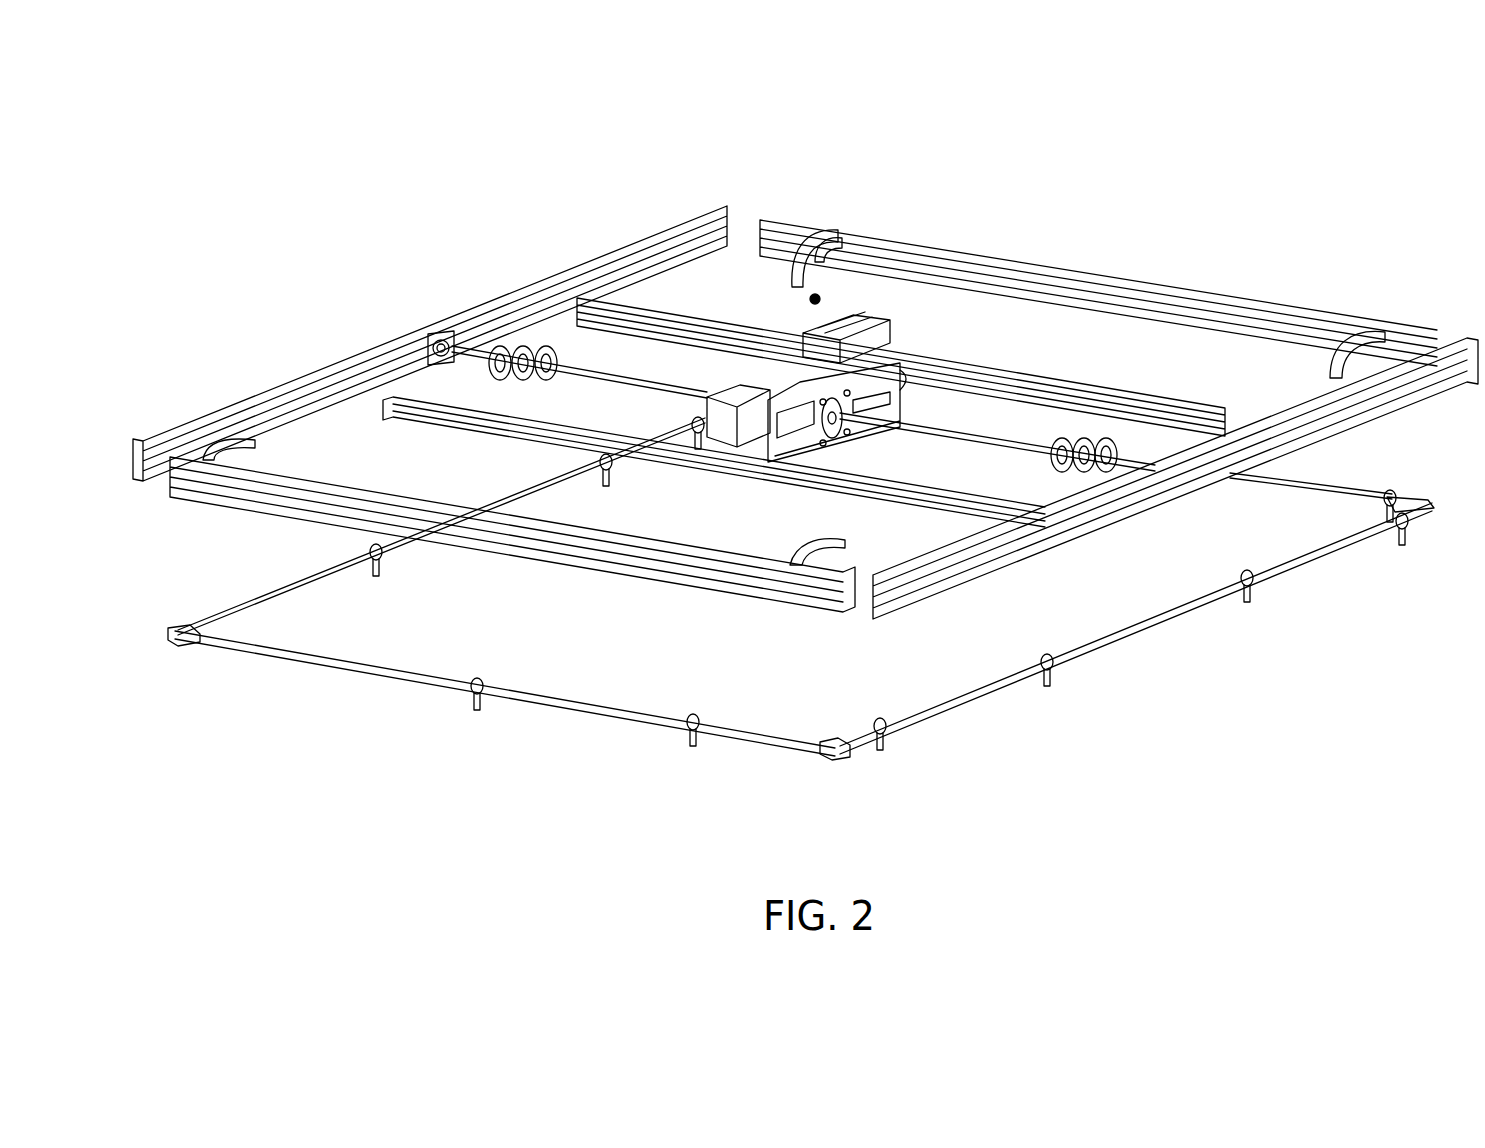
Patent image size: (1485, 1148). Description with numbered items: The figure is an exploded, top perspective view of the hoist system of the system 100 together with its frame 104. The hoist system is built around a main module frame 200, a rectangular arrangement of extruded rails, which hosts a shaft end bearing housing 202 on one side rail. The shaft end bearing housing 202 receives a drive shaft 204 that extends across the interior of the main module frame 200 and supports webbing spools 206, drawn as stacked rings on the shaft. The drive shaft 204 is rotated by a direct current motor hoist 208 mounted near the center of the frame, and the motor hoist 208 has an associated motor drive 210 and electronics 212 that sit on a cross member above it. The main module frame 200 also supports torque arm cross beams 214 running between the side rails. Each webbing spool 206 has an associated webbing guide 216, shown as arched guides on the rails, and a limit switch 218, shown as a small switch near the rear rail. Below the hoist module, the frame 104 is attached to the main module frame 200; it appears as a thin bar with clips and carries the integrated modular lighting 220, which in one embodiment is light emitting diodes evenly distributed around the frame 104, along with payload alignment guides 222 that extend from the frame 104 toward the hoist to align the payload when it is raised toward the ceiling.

The system 100 is at (384, 126).
The frame 104 is at (1350, 553).
The main module frame 200 is at (287, 515).
The shaft end bearing housing 202 is at (432, 330).
The drive shaft 204 is at (612, 378).
The webbing spool 206 is at (492, 376).
The direct current motor hoist 208 is at (960, 490).
The motor drive 210 is at (872, 320).
The electronics 212 is at (903, 350).
The torque arm cross beam 214 is at (1197, 290).
The webbing guide 216 is at (785, 274).
The limit switch 218 is at (810, 298).
The integrated modular lighting 220 is at (957, 700).
The payload alignment guide 222 is at (1255, 594).